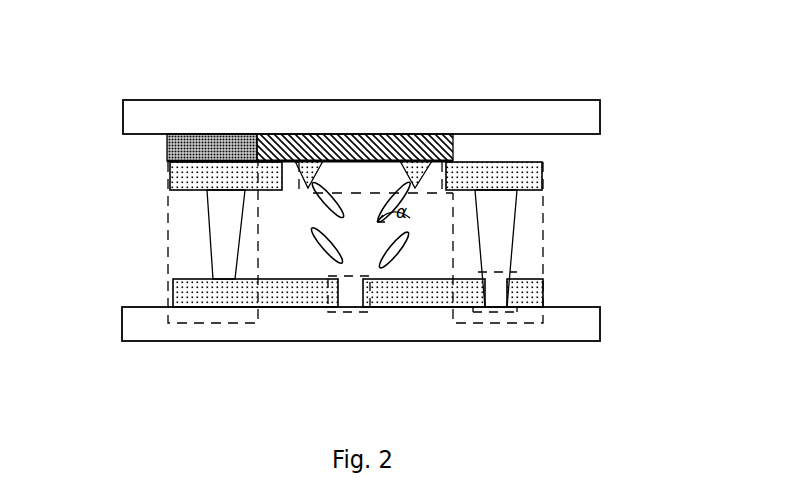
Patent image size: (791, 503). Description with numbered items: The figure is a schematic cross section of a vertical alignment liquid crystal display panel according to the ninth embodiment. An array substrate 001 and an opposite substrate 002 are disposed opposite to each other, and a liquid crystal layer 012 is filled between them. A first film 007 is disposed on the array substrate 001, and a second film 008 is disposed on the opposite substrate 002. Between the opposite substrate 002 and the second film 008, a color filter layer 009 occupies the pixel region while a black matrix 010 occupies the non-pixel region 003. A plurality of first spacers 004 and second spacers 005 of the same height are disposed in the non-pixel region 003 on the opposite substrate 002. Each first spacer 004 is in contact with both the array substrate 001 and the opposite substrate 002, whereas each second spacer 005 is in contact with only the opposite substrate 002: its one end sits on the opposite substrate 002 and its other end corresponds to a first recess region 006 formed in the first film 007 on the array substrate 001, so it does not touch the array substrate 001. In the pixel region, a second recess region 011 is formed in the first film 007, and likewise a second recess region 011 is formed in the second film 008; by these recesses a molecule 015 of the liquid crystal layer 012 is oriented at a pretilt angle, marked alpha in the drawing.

The array substrate 001 is at (522, 328).
The opposite substrate 002 is at (588, 117).
The non-pixel region 003 is at (202, 323).
The first spacer 004 is at (208, 234).
The second spacer 005 is at (495, 241).
The first recess region 006 is at (475, 290).
The first film 007 is at (543, 290).
The second film 008 is at (515, 181).
The color filter layer 009 is at (305, 160).
The black matrix 010 is at (545, 149).
The second recess region 011 is at (432, 192).
The liquid crystal layer 012 is at (433, 227).
The molecule 015 is at (404, 240).